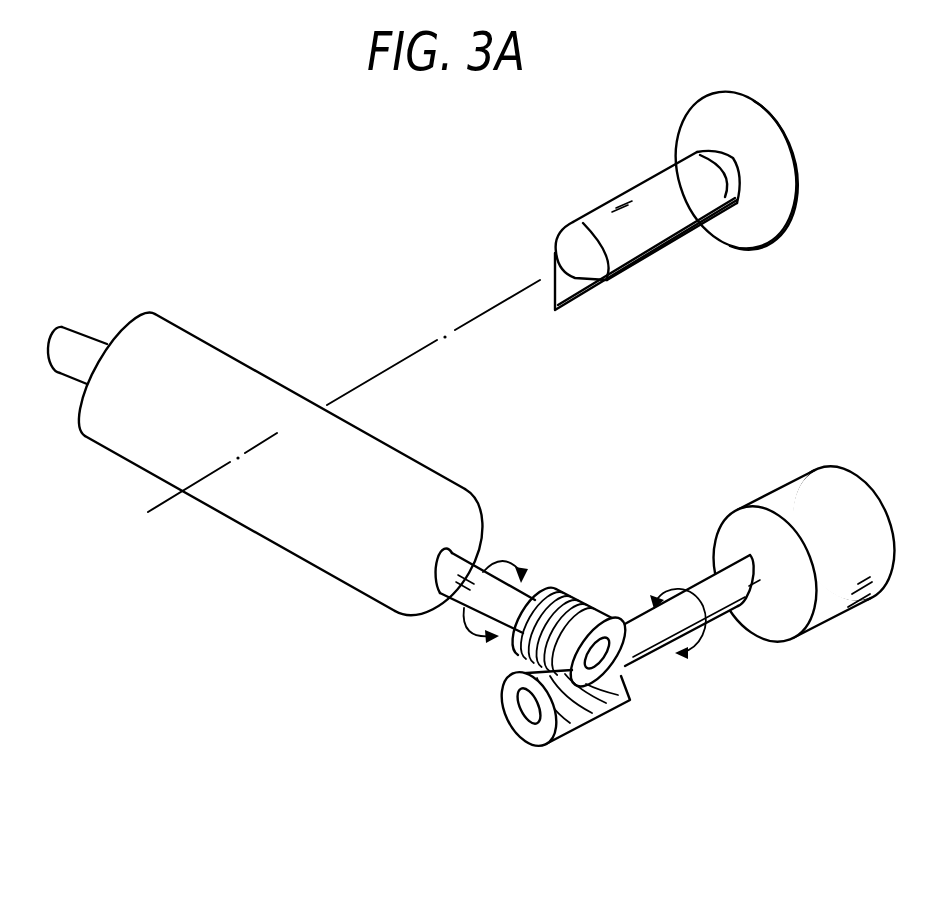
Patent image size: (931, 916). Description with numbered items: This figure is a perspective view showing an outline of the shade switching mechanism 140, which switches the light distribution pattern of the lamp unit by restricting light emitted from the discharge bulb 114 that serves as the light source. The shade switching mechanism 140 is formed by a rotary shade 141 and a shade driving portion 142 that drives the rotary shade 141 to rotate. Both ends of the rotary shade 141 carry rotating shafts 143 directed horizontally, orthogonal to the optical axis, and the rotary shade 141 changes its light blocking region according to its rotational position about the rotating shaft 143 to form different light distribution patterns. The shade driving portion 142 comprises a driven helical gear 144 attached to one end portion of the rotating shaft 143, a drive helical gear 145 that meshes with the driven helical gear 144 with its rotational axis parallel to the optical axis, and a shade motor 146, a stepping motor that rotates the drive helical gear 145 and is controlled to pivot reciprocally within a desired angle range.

The discharge bulb 114 is at (672, 217).
The shade switching mechanism 140 is at (282, 565).
The rotary shade 141 is at (417, 480).
The shade driving portion 142 is at (722, 641).
The rotating shaft 143 is at (70, 340).
The driven helical gear 144 is at (562, 608).
The drive helical gear 145 is at (570, 730).
The shade motor 146 is at (783, 510).